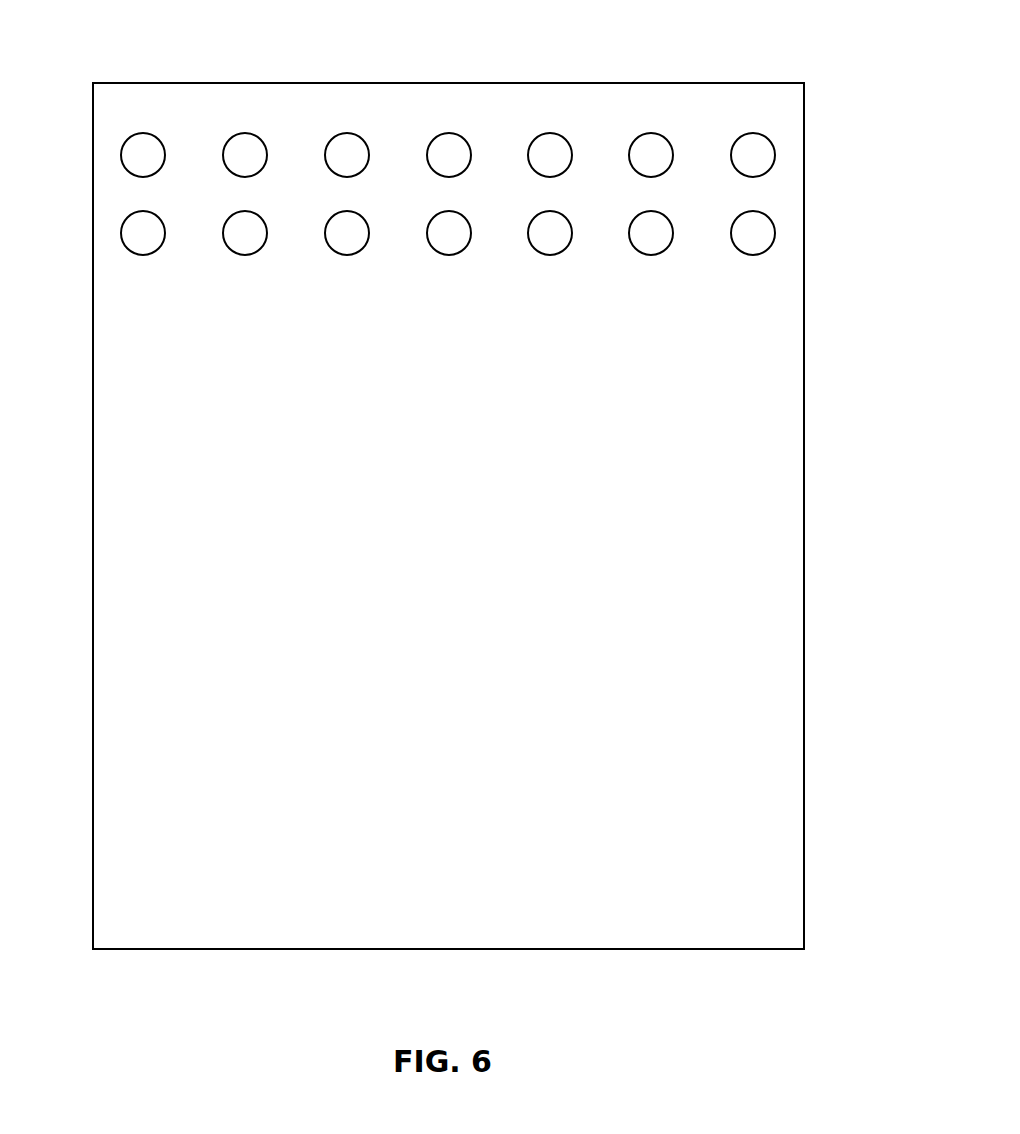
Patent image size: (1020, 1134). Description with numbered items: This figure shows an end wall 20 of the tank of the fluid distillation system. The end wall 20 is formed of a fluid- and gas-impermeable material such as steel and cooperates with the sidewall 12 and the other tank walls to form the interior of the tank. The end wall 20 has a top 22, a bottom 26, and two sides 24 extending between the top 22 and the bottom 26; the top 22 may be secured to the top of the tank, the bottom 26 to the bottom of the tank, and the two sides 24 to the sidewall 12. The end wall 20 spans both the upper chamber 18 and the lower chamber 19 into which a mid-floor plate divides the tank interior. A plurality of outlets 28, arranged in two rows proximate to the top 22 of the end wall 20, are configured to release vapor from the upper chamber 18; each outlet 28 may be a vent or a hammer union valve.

The end wall 20 is at (830, 41).
The top 22 is at (450, 82).
The bottom 26 is at (484, 950).
The sidewall 12 is at (92, 380).
The sides 24 is at (92, 488).
The upper chamber 18 is at (793, 300).
The lower chamber 19 is at (790, 705).
The outlet 28 is at (767, 135).